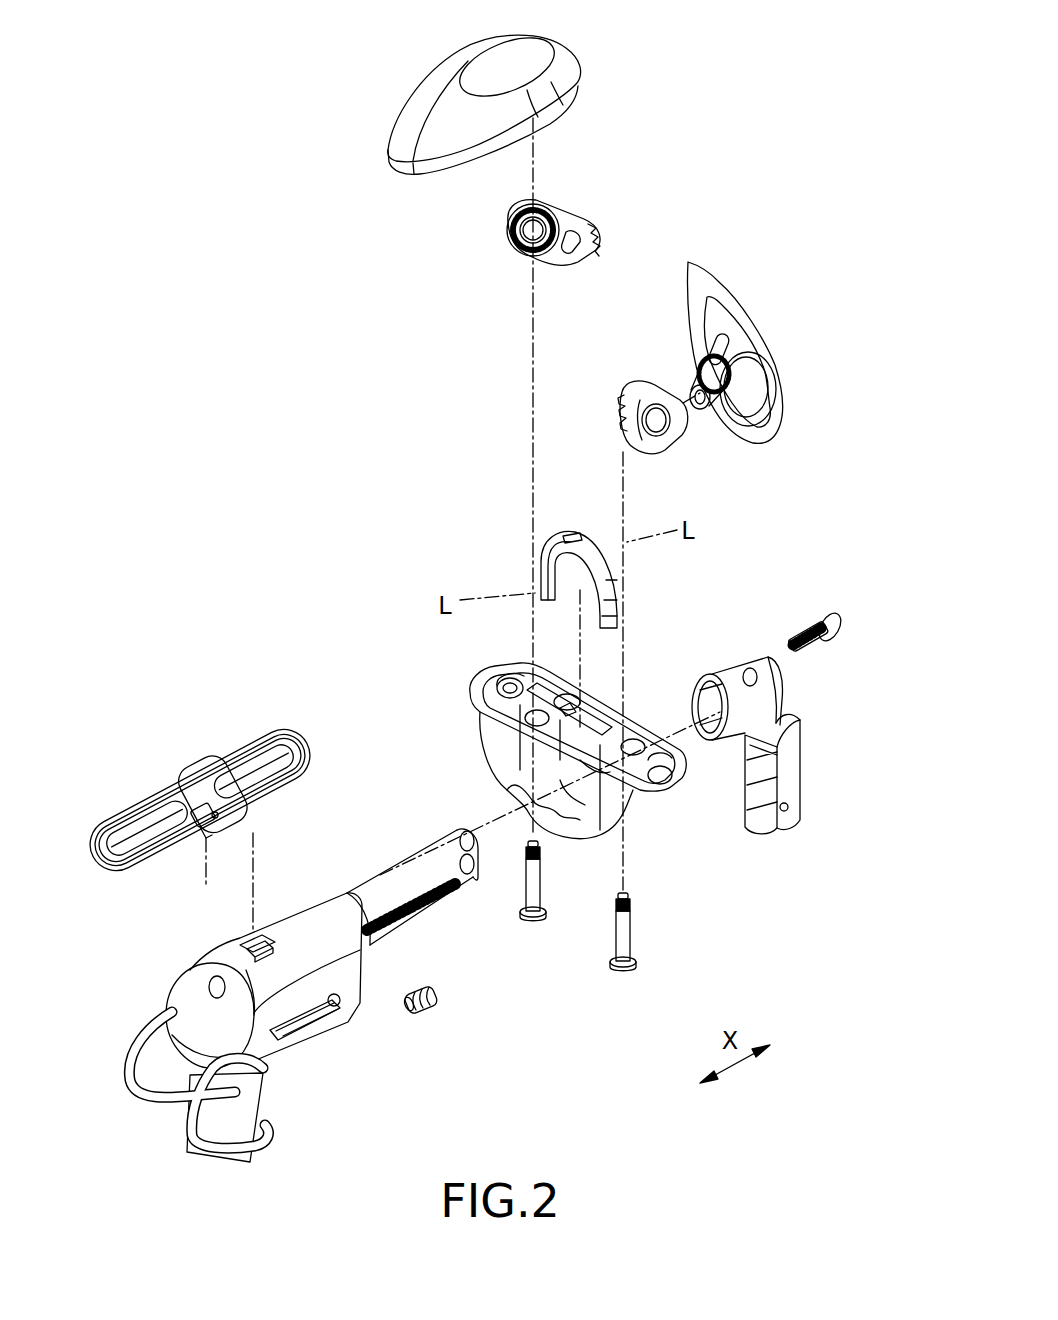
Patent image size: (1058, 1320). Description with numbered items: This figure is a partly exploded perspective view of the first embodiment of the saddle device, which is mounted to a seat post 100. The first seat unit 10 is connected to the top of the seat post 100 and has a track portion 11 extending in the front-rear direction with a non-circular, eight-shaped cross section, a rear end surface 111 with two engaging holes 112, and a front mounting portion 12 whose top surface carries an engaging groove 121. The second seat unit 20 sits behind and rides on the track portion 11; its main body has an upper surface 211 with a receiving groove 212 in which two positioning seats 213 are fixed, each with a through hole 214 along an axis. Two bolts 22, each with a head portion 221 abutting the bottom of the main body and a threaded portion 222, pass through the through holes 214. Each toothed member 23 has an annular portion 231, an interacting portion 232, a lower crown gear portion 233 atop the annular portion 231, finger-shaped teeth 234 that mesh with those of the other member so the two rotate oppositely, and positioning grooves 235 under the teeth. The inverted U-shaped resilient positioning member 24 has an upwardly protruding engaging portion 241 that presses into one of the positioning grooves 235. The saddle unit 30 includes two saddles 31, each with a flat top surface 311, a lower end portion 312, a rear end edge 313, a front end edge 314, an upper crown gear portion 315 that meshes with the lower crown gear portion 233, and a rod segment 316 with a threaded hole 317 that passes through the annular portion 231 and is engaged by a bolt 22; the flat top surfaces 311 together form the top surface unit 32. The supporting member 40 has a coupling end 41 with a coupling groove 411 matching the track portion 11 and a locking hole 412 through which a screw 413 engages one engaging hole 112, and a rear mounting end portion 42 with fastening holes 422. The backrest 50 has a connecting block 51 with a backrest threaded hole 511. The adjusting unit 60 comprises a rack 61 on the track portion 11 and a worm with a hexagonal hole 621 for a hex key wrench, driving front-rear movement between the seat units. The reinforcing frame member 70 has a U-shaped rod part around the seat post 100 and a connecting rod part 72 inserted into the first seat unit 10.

The first seat unit 10 is at (358, 1017).
The track portion 11 is at (460, 897).
The rear end surface 111 is at (470, 845).
The engaging holes 112 is at (477, 882).
The front mounting portion 12 is at (237, 947).
The engaging groove 121 is at (243, 956).
The second seat unit 20 is at (664, 800).
The upper surface 211 is at (633, 740).
The receiving groove 212 is at (580, 740).
The positioning seats 213 is at (500, 710).
The through hole 214 is at (528, 720).
The bolts 22 is at (543, 885).
The head portion 221 is at (627, 968).
The threaded portion 222 is at (617, 898).
The toothed members 23 is at (560, 217).
The annular portion 231 is at (505, 233).
The interacting portion 232 is at (590, 230).
The lower crown gear portion 233 is at (547, 210).
The finger-shaped teeth 234 is at (602, 238).
The positioning grooves 235 is at (617, 407).
The resilient positioning member 24 is at (613, 598).
The engaging portion 241 is at (575, 536).
The saddle unit 30 is at (408, 88).
The saddles 31 is at (782, 368).
The flat top surface 311 is at (470, 64).
The lower end portion 312 is at (740, 393).
The rear end edge 313 is at (565, 52).
The front end edge 314 is at (393, 164).
The upper crown gear portion 315 is at (728, 375).
The rod segment 316 is at (712, 360).
The threaded hole 317 is at (740, 367).
The top surface unit 32 is at (503, 58).
The supporting member 40 is at (777, 738).
The coupling end 41 is at (735, 660).
The coupling groove 411 is at (710, 693).
The locking hole 412 is at (757, 680).
The screw 413 is at (821, 624).
The rear mounting end portion 42 is at (760, 822).
The fastening holes 422 is at (790, 834).
The backrest 50 is at (253, 728).
The connecting block 51 is at (205, 805).
The backrest threaded hole 511 is at (205, 869).
The adjusting unit 60 is at (437, 1017).
The hexagonal hole 621 is at (413, 1013).
The rack 61 is at (413, 922).
The reinforcing frame member 70 is at (277, 1140).
The connecting rod part 72 is at (337, 1013).
The seat post 100 is at (180, 1140).